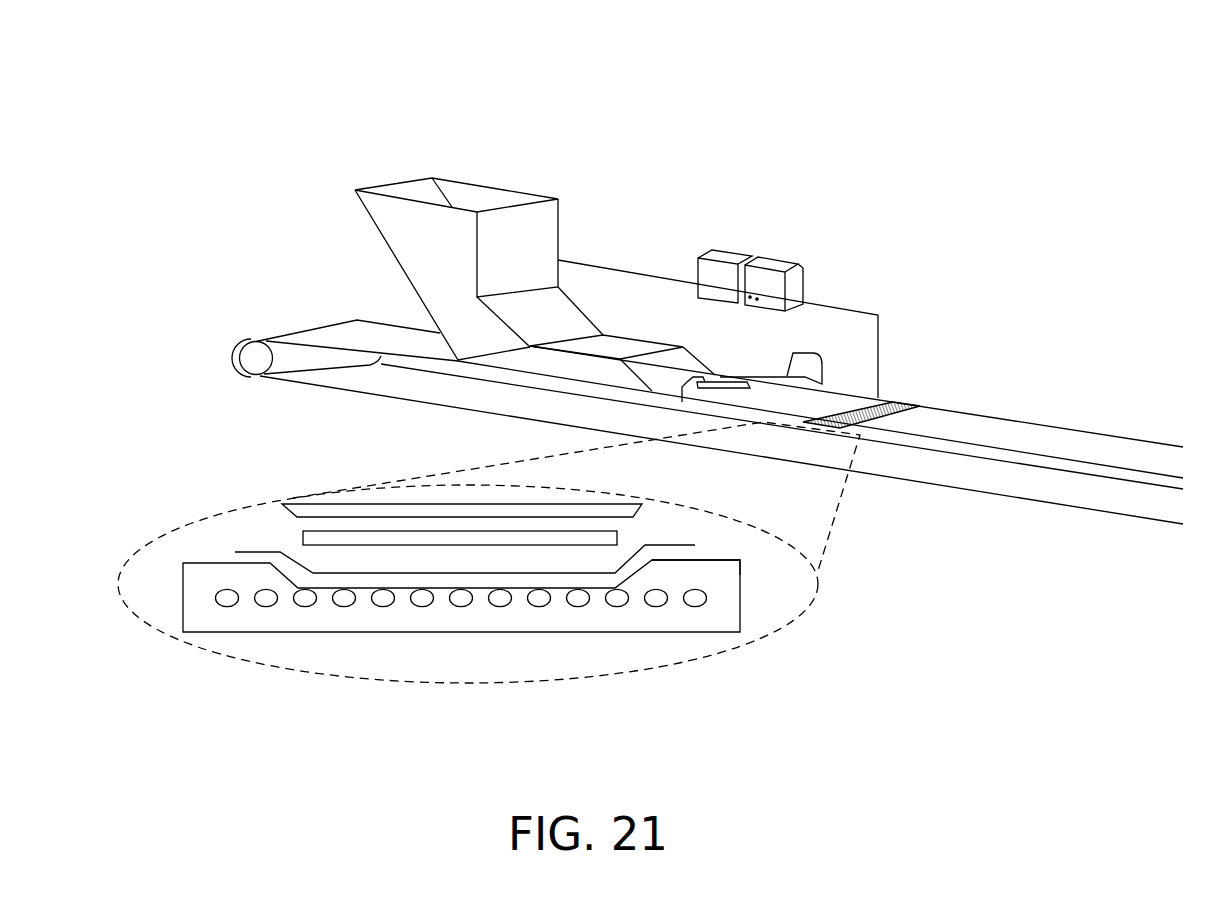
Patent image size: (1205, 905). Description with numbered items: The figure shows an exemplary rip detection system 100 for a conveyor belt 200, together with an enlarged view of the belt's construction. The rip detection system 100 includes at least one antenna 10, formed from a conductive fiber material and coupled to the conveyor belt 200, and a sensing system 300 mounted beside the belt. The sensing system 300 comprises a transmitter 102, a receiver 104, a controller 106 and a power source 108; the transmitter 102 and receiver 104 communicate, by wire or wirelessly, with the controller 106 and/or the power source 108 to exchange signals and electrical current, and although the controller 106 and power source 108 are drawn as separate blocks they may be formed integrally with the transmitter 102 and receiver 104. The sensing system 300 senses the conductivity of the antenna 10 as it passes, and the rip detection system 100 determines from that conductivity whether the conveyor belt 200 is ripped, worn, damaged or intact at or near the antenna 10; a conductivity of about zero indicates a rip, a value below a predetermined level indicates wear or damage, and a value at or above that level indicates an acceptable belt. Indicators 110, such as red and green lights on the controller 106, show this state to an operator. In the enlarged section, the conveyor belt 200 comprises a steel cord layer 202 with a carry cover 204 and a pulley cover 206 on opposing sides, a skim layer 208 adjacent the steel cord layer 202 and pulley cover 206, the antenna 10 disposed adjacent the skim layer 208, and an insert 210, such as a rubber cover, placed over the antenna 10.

The antenna 10 is at (897, 404).
The rip detection system 100 is at (670, 180).
The transmitter 102 is at (815, 357).
The receiver 104 is at (723, 377).
The controller 106 is at (780, 258).
The power source 108 is at (723, 252).
The indicators 110 is at (752, 305).
The conveyor belt 200 is at (225, 518).
The steel cord layer 202 is at (707, 597).
The carry cover 204 is at (541, 580).
The pulley cover 206 is at (722, 572).
The skim layer 208 is at (687, 543).
The insert 210 is at (623, 512).
The sensing system 300 is at (872, 25).